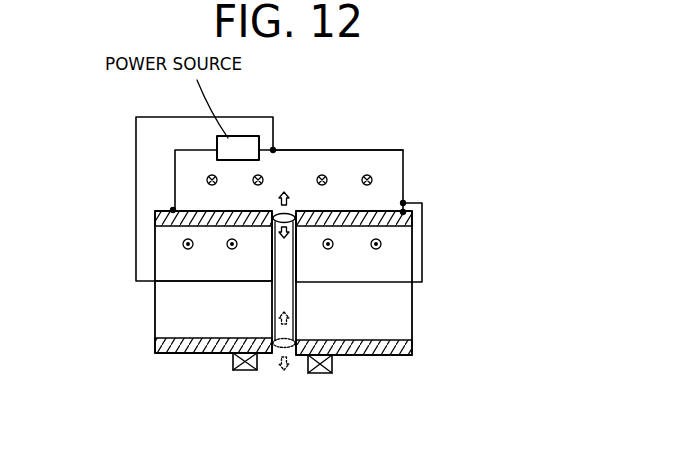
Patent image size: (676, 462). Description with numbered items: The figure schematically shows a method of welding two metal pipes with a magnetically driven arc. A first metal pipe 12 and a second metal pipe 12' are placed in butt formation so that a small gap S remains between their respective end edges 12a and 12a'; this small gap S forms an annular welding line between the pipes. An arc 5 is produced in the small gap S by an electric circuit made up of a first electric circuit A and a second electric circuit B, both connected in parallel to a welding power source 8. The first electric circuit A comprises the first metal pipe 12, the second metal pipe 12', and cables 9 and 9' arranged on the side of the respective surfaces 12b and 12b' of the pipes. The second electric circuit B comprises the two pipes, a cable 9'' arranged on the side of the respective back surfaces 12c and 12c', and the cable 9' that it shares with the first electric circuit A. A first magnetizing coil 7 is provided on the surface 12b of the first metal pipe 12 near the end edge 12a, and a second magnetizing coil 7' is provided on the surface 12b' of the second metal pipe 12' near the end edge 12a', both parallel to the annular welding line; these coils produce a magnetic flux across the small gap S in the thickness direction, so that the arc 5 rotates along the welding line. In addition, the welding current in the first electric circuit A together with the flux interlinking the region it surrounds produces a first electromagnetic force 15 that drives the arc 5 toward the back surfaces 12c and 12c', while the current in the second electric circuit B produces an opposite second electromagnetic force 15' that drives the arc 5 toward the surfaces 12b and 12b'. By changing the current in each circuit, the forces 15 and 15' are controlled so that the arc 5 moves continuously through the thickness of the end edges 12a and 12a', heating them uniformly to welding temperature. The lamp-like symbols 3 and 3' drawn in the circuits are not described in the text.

The welding power source 8 is at (237, 138).
The cable 9' is at (188, 199).
The surface 12b' is at (177, 197).
The indicator lamp 3' is at (137, 254).
The cable 9'' is at (198, 305).
The second metal pipe 12' is at (188, 321).
The back surface 12c' is at (213, 383).
The second magnetizing coil 7' is at (239, 391).
The second electromagnetic force 15' is at (290, 274).
The arc 5 is at (294, 214).
The first electromagnetic force 15 is at (279, 282).
The small gap S is at (270, 300).
The end edge 12a' is at (244, 253).
The cable 9 is at (289, 152).
The first electric circuit A is at (386, 147).
The lamp 3 is at (323, 154).
The surface 12b is at (373, 197).
The second electric circuit B is at (391, 277).
The end edge 12a is at (330, 269).
The back surface 12c is at (354, 375).
The first magnetizing coil 7 is at (320, 390).
The first metal pipe 12 is at (367, 322).